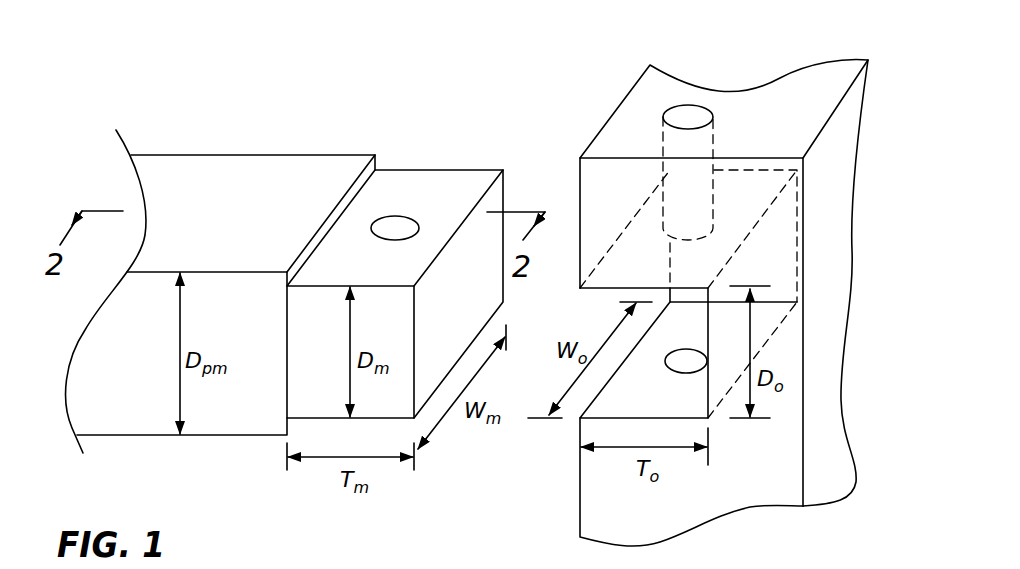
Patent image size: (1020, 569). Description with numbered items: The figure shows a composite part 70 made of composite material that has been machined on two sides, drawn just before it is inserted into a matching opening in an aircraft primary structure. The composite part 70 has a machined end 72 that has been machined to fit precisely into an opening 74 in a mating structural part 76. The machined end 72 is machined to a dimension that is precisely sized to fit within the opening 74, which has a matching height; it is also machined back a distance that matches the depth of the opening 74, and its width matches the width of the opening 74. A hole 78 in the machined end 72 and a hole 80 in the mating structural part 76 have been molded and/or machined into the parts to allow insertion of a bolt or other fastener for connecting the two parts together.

The composite part 70 is at (278, 116).
The machined end 72 is at (465, 122).
The opening 74 is at (616, 399).
The mating structural part 76 is at (764, 42).
The hole 78 is at (396, 216).
The hole 80 is at (688, 105).